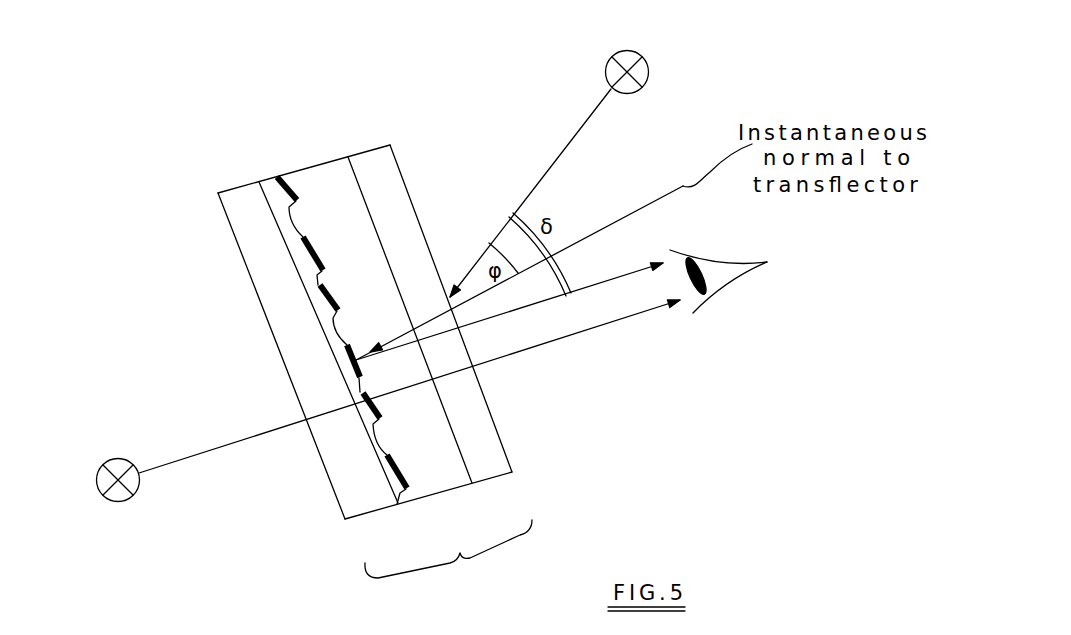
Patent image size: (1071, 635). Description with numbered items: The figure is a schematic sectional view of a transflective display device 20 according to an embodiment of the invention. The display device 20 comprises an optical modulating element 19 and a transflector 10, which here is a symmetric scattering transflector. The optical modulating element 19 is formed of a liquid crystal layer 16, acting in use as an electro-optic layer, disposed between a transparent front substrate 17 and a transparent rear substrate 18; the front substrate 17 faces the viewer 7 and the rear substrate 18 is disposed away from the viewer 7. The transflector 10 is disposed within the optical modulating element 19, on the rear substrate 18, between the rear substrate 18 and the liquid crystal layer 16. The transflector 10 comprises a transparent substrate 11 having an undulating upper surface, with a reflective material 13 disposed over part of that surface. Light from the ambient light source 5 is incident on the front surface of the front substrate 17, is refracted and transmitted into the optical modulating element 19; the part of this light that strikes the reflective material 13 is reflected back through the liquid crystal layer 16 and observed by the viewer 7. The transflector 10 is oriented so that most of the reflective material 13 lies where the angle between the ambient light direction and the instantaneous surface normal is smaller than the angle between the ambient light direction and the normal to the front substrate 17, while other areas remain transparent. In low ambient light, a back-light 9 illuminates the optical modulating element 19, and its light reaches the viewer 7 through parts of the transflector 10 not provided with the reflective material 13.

The ambient light source 5 is at (640, 162).
The viewer 7 is at (585, 305).
The back-light 9 is at (371, 401).
The transflector 10 is at (275, 193).
The transparent substrate 11 is at (390, 492).
The reflective material 13 is at (400, 478).
The liquid crystal layer 16 is at (322, 178).
The front substrate 17 is at (477, 427).
The rear substrate 18 is at (243, 218).
The optical modulating element 19 is at (448, 563).
The transflective display device 20 is at (448, 173).